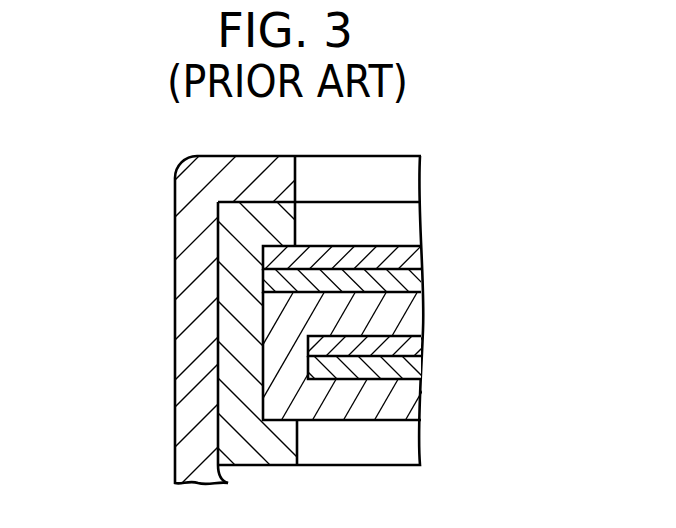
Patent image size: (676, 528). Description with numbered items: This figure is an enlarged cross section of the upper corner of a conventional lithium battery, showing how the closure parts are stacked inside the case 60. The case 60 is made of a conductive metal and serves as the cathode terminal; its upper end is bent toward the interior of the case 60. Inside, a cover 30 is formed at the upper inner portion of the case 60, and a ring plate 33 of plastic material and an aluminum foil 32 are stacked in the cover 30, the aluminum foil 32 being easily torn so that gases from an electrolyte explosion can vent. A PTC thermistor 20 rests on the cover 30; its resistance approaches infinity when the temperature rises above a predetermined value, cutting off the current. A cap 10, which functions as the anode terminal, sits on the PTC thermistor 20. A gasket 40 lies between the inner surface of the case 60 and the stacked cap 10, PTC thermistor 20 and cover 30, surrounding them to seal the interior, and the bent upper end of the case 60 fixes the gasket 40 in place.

The cap 10 is at (402, 255).
The PTC thermistor 20 is at (402, 280).
The cover 30 is at (278, 396).
The aluminum foil 32 is at (402, 348).
The ring plate 33 is at (402, 370).
The gasket 40 is at (232, 329).
The case 60 is at (193, 230).